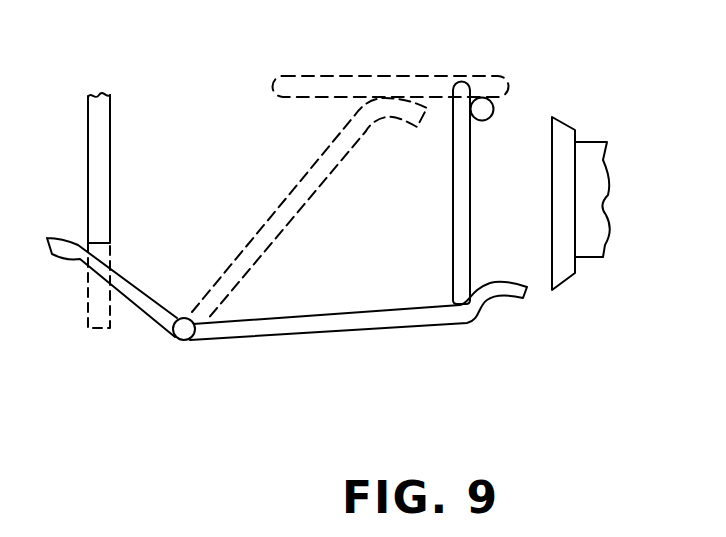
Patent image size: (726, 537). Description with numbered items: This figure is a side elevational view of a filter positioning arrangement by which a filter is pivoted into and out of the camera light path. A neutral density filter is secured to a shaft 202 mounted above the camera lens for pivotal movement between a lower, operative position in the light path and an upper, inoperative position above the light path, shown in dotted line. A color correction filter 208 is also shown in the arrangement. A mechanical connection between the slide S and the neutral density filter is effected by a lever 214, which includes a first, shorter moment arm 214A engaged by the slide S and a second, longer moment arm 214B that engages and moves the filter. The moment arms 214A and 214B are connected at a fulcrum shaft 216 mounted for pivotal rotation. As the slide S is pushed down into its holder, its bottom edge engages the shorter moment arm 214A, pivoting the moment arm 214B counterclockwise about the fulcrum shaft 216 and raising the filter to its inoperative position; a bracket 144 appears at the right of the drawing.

The slide S is at (88, 129).
The frame bracket 144 is at (587, 140).
The shaft 202 is at (497, 117).
The color correction filter 208 is at (388, 75).
The lever 214 is at (287, 245).
The first moment arm 214A is at (148, 307).
The second moment arm 214B is at (293, 333).
The fulcrum shaft 216 is at (183, 327).